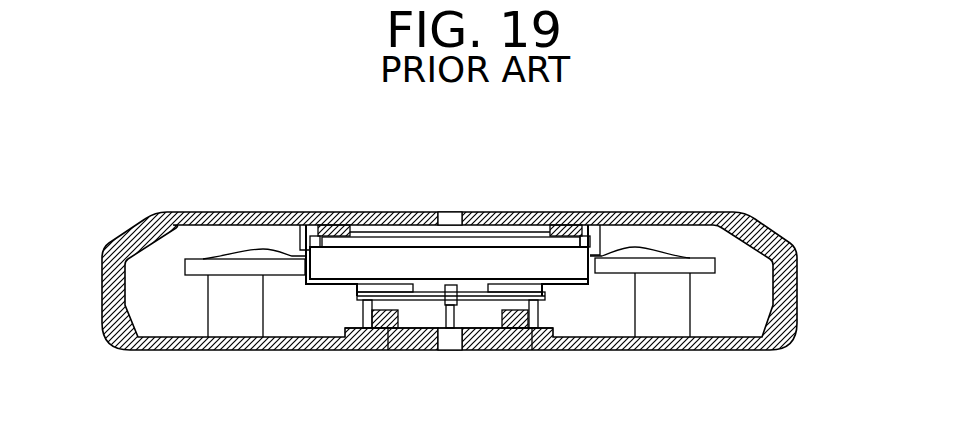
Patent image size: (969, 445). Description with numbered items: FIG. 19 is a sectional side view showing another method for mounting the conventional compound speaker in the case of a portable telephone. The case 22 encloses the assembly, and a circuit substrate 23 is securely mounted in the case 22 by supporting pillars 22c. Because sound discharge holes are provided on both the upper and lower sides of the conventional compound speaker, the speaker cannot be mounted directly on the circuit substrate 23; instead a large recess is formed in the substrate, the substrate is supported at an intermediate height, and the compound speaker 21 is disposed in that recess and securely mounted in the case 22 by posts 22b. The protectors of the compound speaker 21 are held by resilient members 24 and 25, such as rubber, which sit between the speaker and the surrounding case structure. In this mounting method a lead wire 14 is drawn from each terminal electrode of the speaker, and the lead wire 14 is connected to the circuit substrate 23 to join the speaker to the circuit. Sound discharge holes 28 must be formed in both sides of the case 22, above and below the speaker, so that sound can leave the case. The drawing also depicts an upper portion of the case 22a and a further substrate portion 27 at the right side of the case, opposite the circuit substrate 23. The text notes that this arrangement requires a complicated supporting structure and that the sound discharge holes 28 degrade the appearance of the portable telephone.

The lead wire 14 is at (590, 276).
The compound speaker 21 is at (427, 258).
The case 22 is at (127, 350).
The upper holding portion of casing 22a is at (307, 243).
The post 22b is at (530, 337).
The supporting pillar 22c is at (245, 322).
The circuit substrate 23 is at (202, 265).
The resilient member 24 is at (326, 229).
The resilient member 25 is at (385, 350).
The right circuit board 27 is at (633, 249).
The sound discharge hole 28 is at (450, 214).